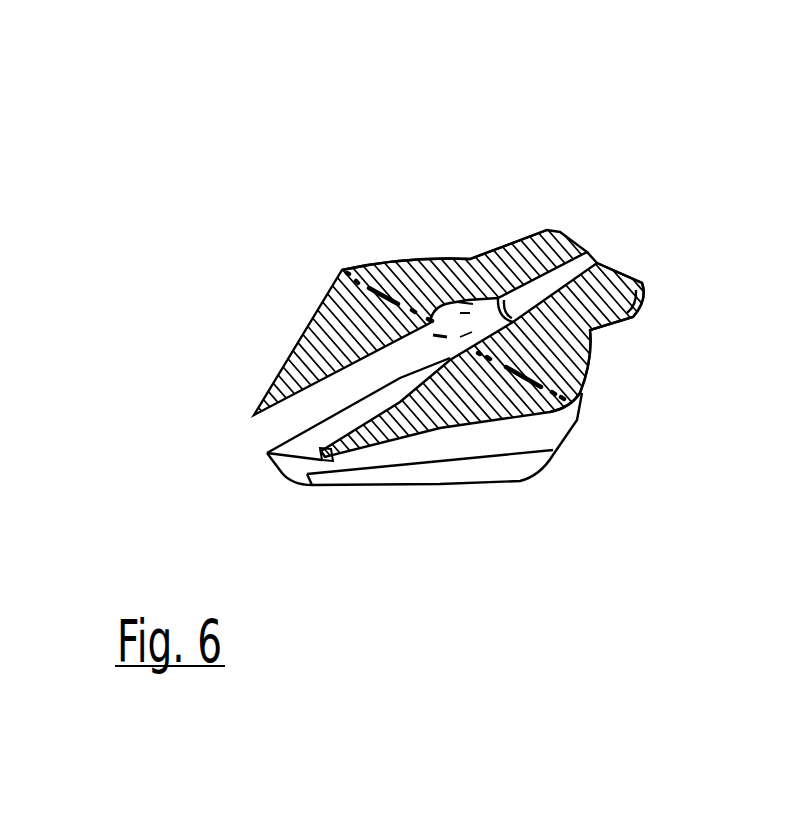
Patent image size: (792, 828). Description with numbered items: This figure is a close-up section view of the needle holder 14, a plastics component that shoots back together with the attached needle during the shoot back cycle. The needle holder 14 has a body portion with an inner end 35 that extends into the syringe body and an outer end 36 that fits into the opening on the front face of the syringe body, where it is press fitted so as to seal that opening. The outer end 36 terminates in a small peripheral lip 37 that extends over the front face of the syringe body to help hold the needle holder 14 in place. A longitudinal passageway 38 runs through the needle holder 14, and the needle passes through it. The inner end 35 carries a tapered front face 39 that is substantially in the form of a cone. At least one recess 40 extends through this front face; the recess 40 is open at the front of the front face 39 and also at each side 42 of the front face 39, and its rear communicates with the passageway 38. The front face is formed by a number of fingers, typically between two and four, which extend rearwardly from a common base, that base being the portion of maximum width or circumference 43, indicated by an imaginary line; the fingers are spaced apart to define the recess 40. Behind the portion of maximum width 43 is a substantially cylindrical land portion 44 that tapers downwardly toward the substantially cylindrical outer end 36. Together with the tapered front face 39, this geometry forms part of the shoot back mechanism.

The needle holder 14 is at (265, 285).
The inner end 35 is at (264, 320).
The outer end 36 is at (505, 197).
The peripheral lip 37 is at (646, 303).
The longitudinal passageway 38 is at (570, 270).
The tapered front face 39 is at (287, 362).
The recess 40 is at (454, 349).
The side of the front face 42 is at (360, 487).
The portion of maximum width or circumference 43 is at (348, 272).
The cylindrical land portion 44 is at (396, 257).